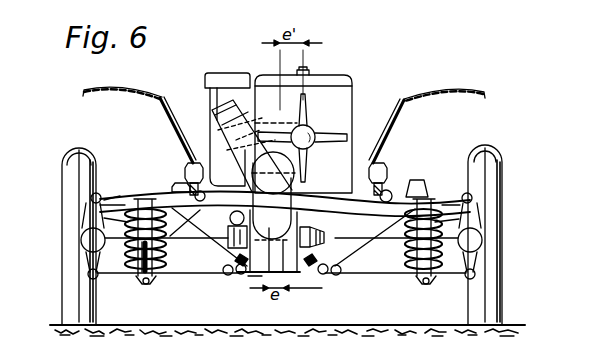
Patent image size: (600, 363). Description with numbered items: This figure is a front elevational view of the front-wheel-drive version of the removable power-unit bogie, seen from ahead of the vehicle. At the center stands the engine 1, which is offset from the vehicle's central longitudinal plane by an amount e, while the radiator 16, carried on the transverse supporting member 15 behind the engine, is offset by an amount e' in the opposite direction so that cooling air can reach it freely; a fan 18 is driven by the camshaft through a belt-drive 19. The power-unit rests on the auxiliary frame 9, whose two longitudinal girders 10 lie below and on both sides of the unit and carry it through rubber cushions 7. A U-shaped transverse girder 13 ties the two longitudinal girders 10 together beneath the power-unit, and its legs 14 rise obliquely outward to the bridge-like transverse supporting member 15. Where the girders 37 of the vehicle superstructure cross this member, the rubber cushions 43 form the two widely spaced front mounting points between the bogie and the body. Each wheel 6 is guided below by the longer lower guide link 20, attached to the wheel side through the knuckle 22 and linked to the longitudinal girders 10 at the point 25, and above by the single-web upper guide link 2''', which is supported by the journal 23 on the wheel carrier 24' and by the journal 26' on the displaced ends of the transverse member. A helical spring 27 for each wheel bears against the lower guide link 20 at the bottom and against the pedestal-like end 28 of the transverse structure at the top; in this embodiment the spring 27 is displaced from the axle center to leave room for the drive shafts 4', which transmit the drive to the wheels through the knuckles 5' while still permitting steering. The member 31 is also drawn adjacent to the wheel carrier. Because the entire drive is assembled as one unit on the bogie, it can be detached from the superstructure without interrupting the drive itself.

The engine 1 is at (300, 226).
The upper guide link 2''' is at (109, 183).
The drive shafts 4' is at (166, 253).
The knuckles 5' is at (71, 237).
The wheel 6 is at (68, 158).
The rubber cushions 7 is at (304, 275).
The auxiliary frame 9 is at (258, 276).
The longitudinal girders 10 is at (238, 276).
The transverse girder 13 is at (224, 250).
The ends of the transverse girder 14 is at (388, 245).
The transverse supporting member 15 is at (325, 200).
The radiator 16 is at (345, 108).
The fan 18 is at (309, 110).
The belt-drive 19 is at (279, 86).
The lower guide link 20 is at (128, 276).
The knuckle 22 is at (88, 274).
The knuckle 23 is at (91, 197).
The wheel carrier 24' is at (76, 227).
The link point 25 is at (226, 275).
The journals 26' is at (169, 180).
The helical spring 27 is at (170, 262).
The pedestal-like end 28 is at (442, 180).
The arm 31 is at (100, 209).
The girders of the vehicle-superstructure 37 is at (190, 166).
The rubber cushions 43 is at (205, 194).